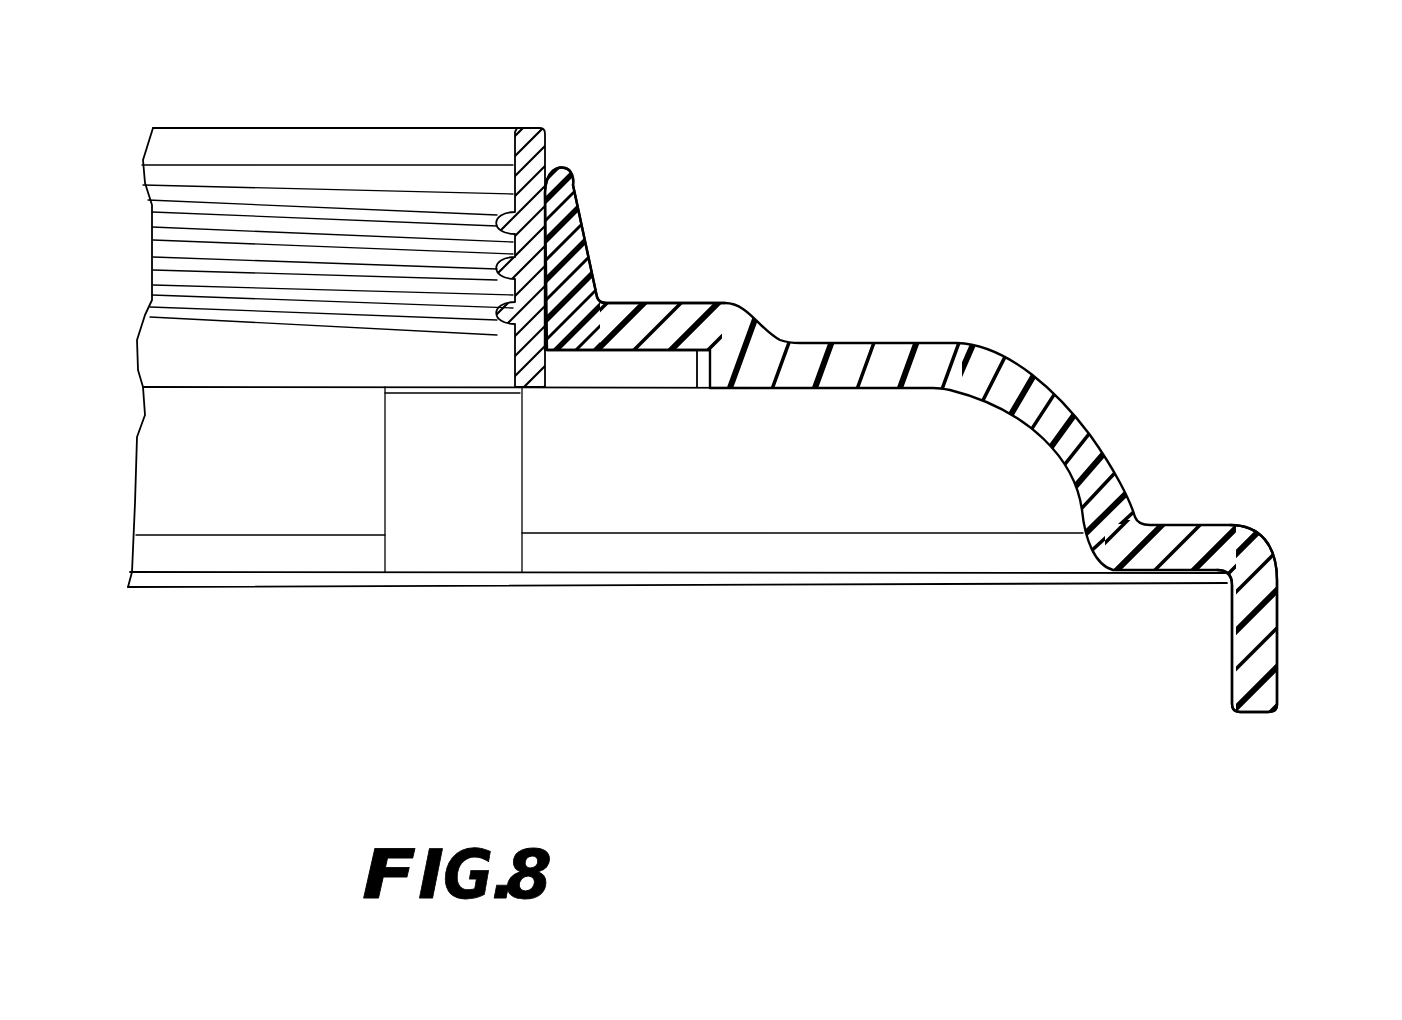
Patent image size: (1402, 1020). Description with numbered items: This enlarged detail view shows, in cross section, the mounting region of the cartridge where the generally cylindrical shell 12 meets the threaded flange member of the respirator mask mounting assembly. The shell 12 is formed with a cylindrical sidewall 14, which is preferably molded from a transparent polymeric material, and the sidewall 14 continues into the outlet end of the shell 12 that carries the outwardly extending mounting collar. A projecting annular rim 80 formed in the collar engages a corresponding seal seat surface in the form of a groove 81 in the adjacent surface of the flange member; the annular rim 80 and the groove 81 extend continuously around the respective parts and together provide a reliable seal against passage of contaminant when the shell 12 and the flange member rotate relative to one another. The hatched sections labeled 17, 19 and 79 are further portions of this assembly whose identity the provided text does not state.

The threaded neck of container 19 is at (302, 124).
The groove 81 is at (520, 157).
The annular rim 80 is at (572, 182).
The flange 17 is at (712, 302).
The thin wall 79 is at (717, 305).
The shell 12 is at (1038, 366).
The sidewall 14 is at (1263, 652).